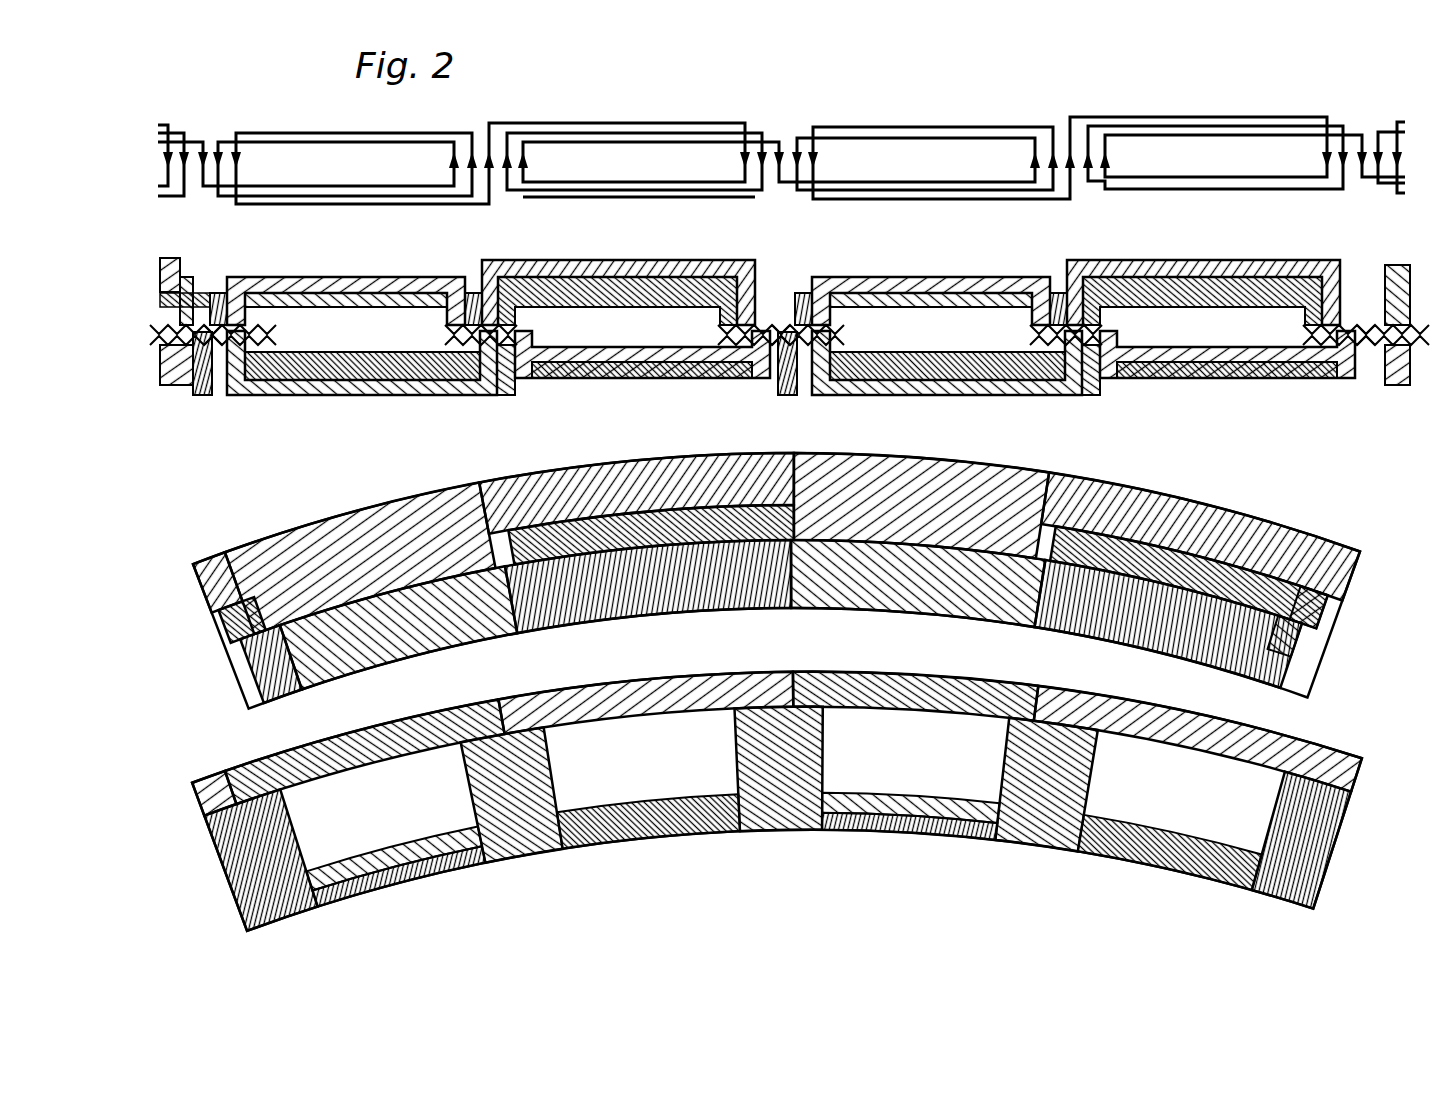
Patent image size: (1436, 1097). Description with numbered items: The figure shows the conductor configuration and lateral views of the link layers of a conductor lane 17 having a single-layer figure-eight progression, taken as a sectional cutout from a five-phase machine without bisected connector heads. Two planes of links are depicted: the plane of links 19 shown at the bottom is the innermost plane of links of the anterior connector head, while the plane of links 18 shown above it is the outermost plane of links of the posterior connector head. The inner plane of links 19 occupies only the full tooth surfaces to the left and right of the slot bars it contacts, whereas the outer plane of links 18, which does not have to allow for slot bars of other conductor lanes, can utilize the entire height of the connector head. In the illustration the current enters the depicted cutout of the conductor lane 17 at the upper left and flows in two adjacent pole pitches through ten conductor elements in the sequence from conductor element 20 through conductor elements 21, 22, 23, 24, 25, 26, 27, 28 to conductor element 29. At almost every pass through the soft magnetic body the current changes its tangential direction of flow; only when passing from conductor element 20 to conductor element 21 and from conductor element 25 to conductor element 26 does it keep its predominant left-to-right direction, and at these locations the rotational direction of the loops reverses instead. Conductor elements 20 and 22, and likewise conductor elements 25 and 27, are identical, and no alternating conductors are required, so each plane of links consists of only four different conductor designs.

The conductor lane 17 is at (205, 142).
The outer plane of links 18 is at (216, 647).
The inner plane of links 19 is at (216, 851).
The conductor element 20 is at (222, 290).
The conductor element 21 is at (213, 387).
The conductor element 22 is at (450, 290).
The conductor element 23 is at (320, 395).
The conductor element 24 is at (390, 277).
The conductor element 25 is at (497, 385).
The conductor element 26 is at (540, 265).
The conductor element 27 is at (730, 380).
The conductor element 28 is at (640, 278).
The conductor element 29 is at (665, 380).